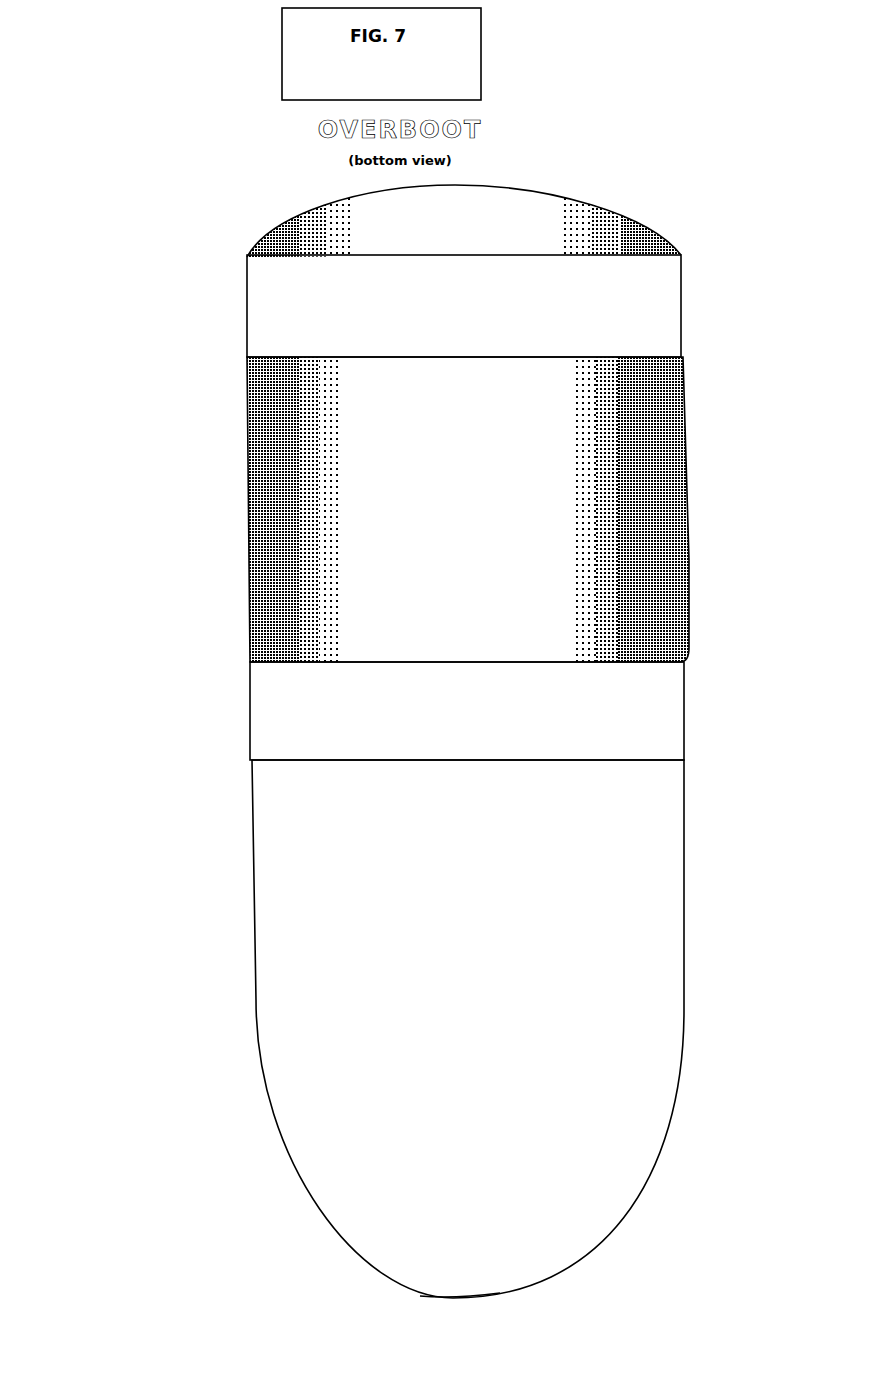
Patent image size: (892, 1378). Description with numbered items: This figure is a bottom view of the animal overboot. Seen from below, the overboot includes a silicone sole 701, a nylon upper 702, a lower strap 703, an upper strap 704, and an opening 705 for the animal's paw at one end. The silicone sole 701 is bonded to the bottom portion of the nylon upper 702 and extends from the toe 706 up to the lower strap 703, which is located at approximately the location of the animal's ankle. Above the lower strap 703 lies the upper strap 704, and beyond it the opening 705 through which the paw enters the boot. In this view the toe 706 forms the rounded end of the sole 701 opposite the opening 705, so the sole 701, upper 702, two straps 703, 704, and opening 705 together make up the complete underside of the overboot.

The silicone sole 701 is at (402, 1035).
The nylon upper 702 is at (645, 535).
The lower strap 703 is at (278, 727).
The upper strap 704 is at (623, 313).
The opening for the animal's paw 705 is at (452, 187).
The toe 706 is at (500, 1298).